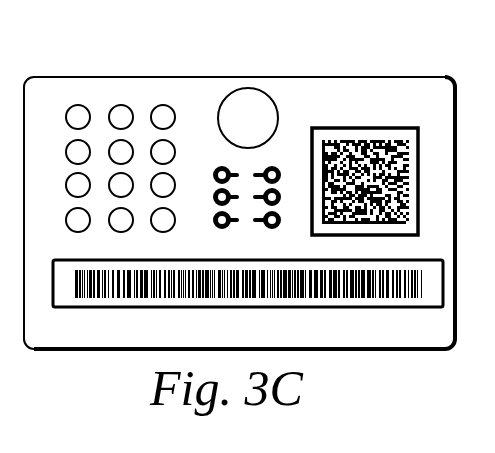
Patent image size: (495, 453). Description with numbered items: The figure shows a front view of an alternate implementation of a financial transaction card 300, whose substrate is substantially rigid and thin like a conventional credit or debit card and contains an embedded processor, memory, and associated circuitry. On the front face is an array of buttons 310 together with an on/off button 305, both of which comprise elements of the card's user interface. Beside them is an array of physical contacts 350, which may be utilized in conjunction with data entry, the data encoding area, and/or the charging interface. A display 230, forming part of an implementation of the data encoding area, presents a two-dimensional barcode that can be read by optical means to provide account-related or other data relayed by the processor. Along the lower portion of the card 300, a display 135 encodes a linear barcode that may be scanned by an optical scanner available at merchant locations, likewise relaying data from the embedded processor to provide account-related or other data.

The financial transaction card 300 is at (398, 77).
The array of buttons 310 is at (52, 96).
The on/off button 305 is at (250, 88).
The array of physical contacts 350 is at (279, 167).
The display 230 is at (343, 128).
The display 135 is at (280, 307).